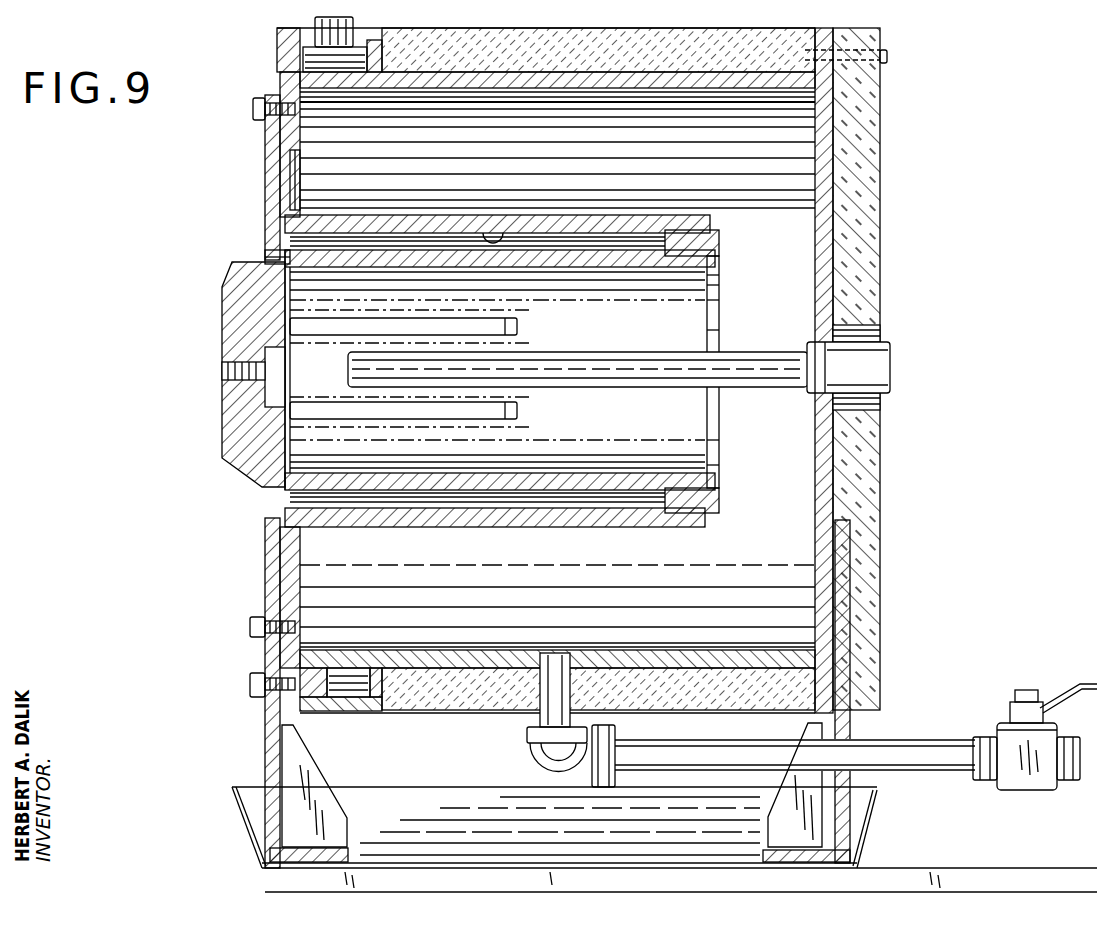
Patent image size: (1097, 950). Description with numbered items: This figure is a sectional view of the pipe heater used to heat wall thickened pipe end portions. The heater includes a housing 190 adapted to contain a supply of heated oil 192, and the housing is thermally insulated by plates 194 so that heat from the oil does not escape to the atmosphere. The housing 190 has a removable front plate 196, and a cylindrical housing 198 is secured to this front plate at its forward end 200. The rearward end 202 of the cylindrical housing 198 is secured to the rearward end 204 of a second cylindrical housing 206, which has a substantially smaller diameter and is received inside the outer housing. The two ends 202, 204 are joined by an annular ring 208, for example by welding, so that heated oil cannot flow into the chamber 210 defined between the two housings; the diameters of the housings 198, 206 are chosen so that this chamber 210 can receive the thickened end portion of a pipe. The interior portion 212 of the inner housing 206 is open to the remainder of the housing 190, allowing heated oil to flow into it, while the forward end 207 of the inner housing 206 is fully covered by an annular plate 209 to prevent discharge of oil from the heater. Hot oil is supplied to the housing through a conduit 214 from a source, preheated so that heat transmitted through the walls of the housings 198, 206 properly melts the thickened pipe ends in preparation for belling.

The housing 190 is at (820, 158).
The heated oil 192 is at (805, 215).
The plates 194 is at (865, 284).
The removable front plate 196 is at (272, 193).
The cylindrical housing 198 is at (612, 195).
The forward end 200 is at (318, 215).
The rearward end 202 is at (705, 217).
The rearward end 204 is at (707, 272).
The cylindrical housing 206 is at (638, 257).
The forward end 207 is at (267, 258).
The annular ring 208 is at (718, 238).
The annular plate 209 is at (225, 298).
The chamber 210 is at (500, 236).
The interior portion 212 is at (700, 331).
The conduit 214 is at (715, 752).